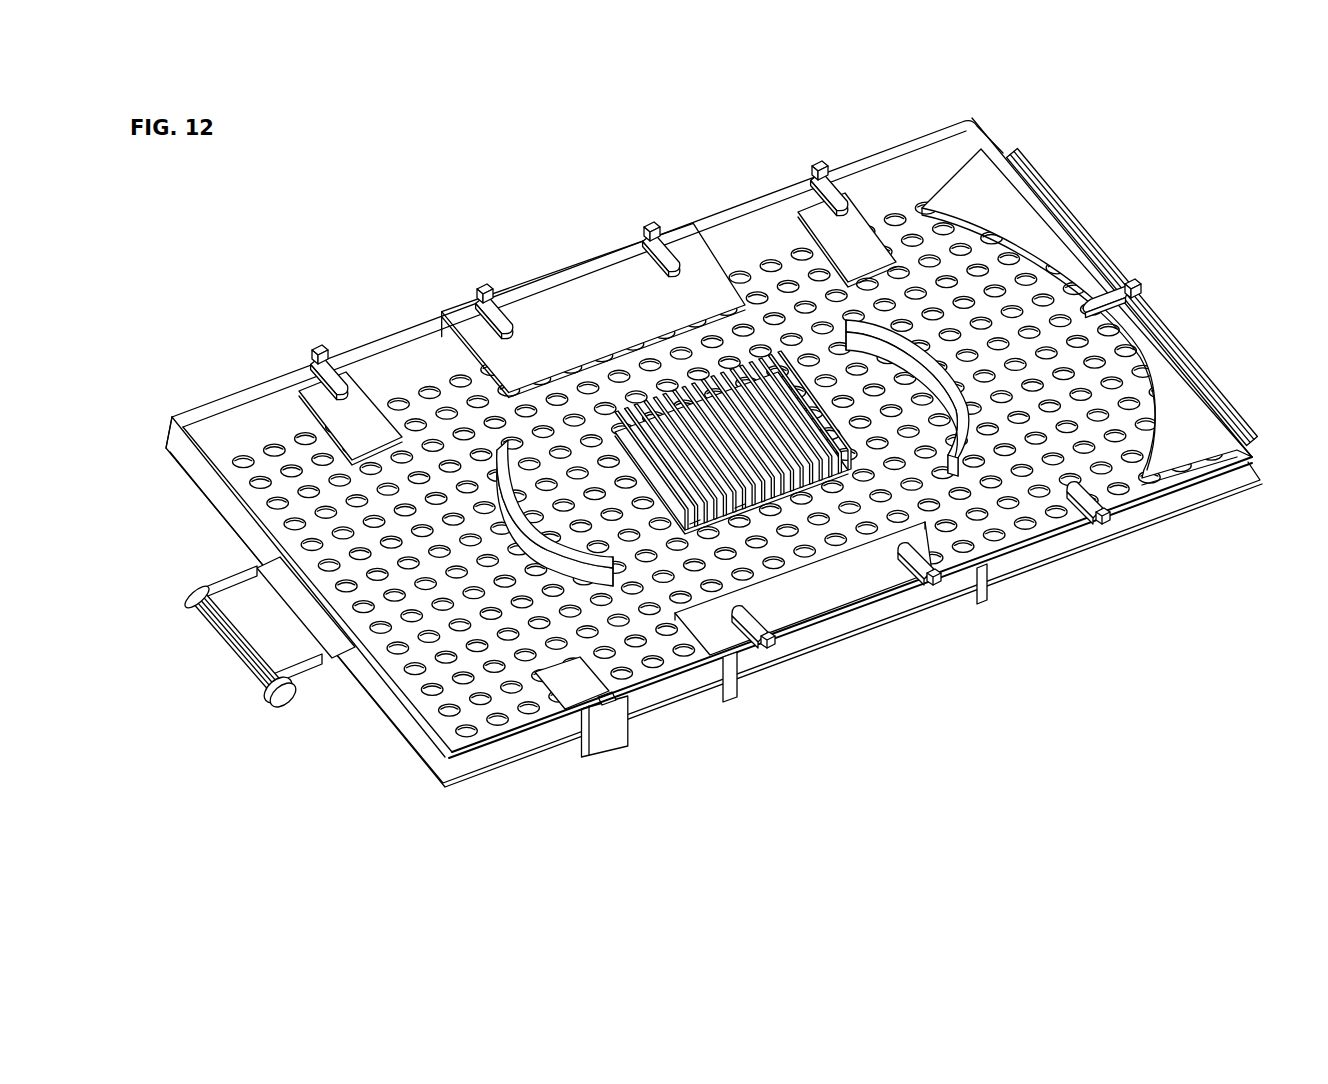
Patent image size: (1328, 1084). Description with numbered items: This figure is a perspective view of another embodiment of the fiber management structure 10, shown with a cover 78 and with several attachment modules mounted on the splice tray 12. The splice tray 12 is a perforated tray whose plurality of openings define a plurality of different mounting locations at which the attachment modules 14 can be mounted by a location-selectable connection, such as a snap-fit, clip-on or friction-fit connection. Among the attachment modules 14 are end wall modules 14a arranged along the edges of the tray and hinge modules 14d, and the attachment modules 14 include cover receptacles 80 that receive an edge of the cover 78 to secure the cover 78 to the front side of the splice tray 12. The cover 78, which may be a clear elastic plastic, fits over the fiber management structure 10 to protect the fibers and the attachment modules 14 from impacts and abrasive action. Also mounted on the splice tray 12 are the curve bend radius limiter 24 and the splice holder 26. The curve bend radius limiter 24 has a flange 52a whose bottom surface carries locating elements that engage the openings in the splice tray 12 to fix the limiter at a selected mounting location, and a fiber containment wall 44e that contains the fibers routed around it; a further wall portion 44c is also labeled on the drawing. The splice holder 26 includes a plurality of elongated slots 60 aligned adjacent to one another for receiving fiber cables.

The fiber management structure 10 is at (726, 456).
The splice tray 12 is at (461, 767).
The attachment modules 14 is at (630, 222).
The end wall modules 14a is at (322, 342).
The hinge modules 14d is at (281, 703).
The curve bend radius limiter 24 is at (924, 349).
The splice holder 26 is at (755, 385).
The partition end 44c is at (967, 406).
The fiber containment wall 44e is at (585, 560).
The flange 52a is at (520, 483).
The elongated slots 60 is at (708, 527).
The cover 78 is at (978, 130).
The cover receptacle 80 is at (818, 165).